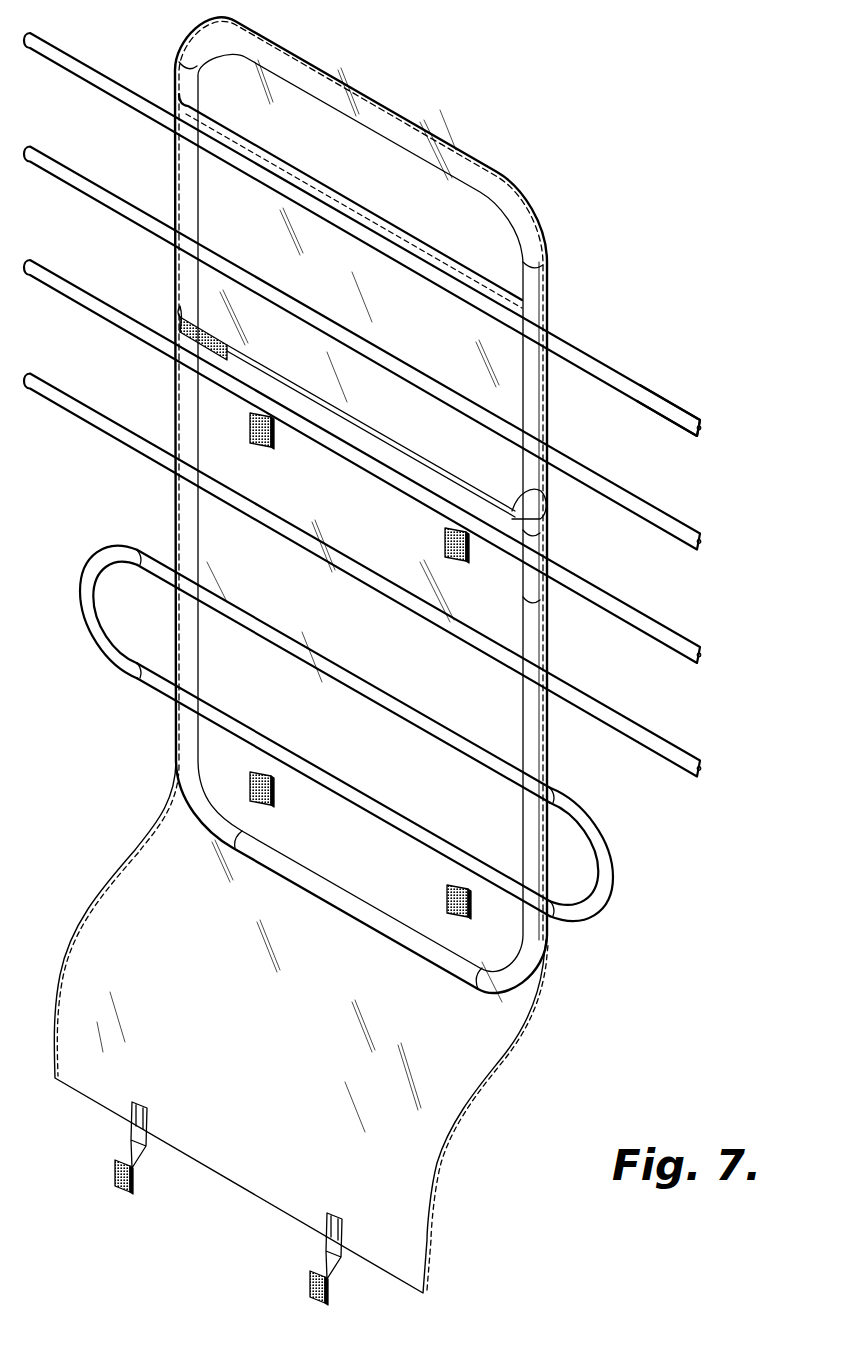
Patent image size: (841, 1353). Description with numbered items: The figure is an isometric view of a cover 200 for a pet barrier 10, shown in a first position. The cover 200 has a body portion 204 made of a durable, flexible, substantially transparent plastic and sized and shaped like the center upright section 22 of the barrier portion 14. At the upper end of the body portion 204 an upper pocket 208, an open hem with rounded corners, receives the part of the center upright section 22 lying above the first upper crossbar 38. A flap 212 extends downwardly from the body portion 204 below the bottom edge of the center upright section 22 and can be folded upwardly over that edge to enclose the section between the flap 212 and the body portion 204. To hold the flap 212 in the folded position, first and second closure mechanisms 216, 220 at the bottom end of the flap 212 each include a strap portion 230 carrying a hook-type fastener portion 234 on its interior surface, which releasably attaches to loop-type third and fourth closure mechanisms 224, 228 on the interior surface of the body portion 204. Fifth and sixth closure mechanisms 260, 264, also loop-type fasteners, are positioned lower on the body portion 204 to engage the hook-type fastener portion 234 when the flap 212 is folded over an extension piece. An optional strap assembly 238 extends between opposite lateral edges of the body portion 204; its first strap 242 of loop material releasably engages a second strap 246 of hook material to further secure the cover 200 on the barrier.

The pet barrier 10 is at (602, 154).
The barrier portion 14 is at (643, 368).
The center upright section 22 is at (546, 316).
The first upper crossbar 38 is at (686, 412).
The cover 200 is at (548, 1015).
The body portion 204 is at (513, 637).
The upper pocket 208 is at (480, 218).
The flap 212 is at (445, 1101).
The first closure mechanism 216 is at (91, 1171).
The second closure mechanism 220 is at (323, 1252).
The third closure mechanism 224 is at (256, 443).
The fourth closure mechanism 228 is at (461, 560).
The strap portion 230 is at (128, 1150).
The hook-type fastener portion 234 is at (114, 1170).
The strap assembly 238 is at (378, 396).
The first strap 242 is at (207, 330).
The second strap 246 is at (543, 500).
The fifth closure mechanism 260 is at (250, 787).
The sixth closure mechanism 264 is at (458, 912).